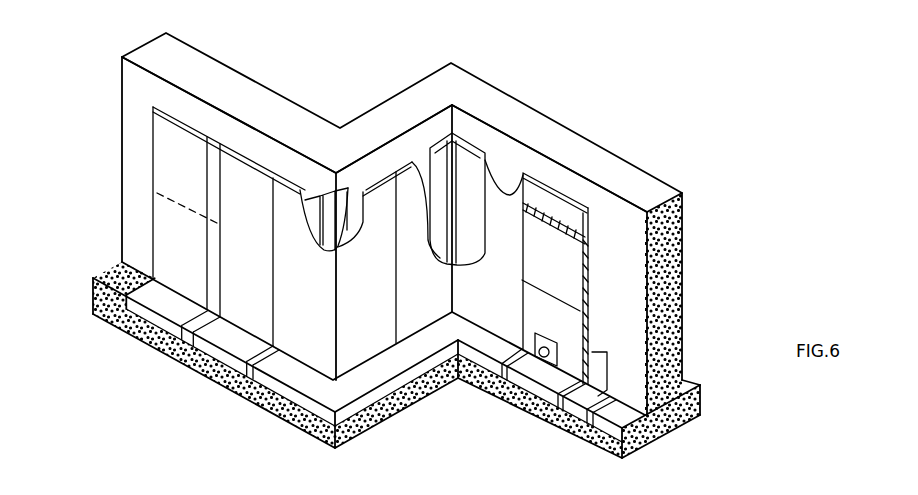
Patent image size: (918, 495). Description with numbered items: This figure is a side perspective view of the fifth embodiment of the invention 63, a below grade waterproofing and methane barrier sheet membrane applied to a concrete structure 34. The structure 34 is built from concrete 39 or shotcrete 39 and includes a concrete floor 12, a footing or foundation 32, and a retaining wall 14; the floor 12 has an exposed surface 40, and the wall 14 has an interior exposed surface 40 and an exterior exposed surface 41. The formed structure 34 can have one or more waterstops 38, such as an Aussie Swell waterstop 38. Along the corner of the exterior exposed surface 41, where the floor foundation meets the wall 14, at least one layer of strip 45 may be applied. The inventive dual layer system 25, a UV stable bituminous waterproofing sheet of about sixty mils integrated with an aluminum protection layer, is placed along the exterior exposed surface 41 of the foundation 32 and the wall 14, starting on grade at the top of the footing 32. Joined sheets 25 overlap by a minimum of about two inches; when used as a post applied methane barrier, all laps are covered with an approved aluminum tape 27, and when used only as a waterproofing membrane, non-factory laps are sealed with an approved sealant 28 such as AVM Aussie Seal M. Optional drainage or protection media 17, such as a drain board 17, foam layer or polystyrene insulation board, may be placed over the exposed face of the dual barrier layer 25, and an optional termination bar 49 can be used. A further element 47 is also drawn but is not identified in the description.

The concrete floor 12 is at (686, 377).
The retaining wall 14 is at (133, 78).
The drain board 17 is at (588, 286).
The dual layer system 25 is at (182, 163).
The aluminum tape 27 is at (167, 212).
The sealant 28 is at (457, 110).
The footing 32 is at (692, 408).
The structure 34 is at (267, 100).
The waterstop 38 is at (605, 398).
The concrete 39 is at (672, 223).
The exposed surface 40 is at (213, 58).
The exterior exposed surface 41 is at (135, 95).
The strip 45 is at (600, 350).
The anchor plate 47 is at (550, 360).
The termination bar 49 is at (413, 150).
The fifth embodiment of the invention 63 is at (658, 55).